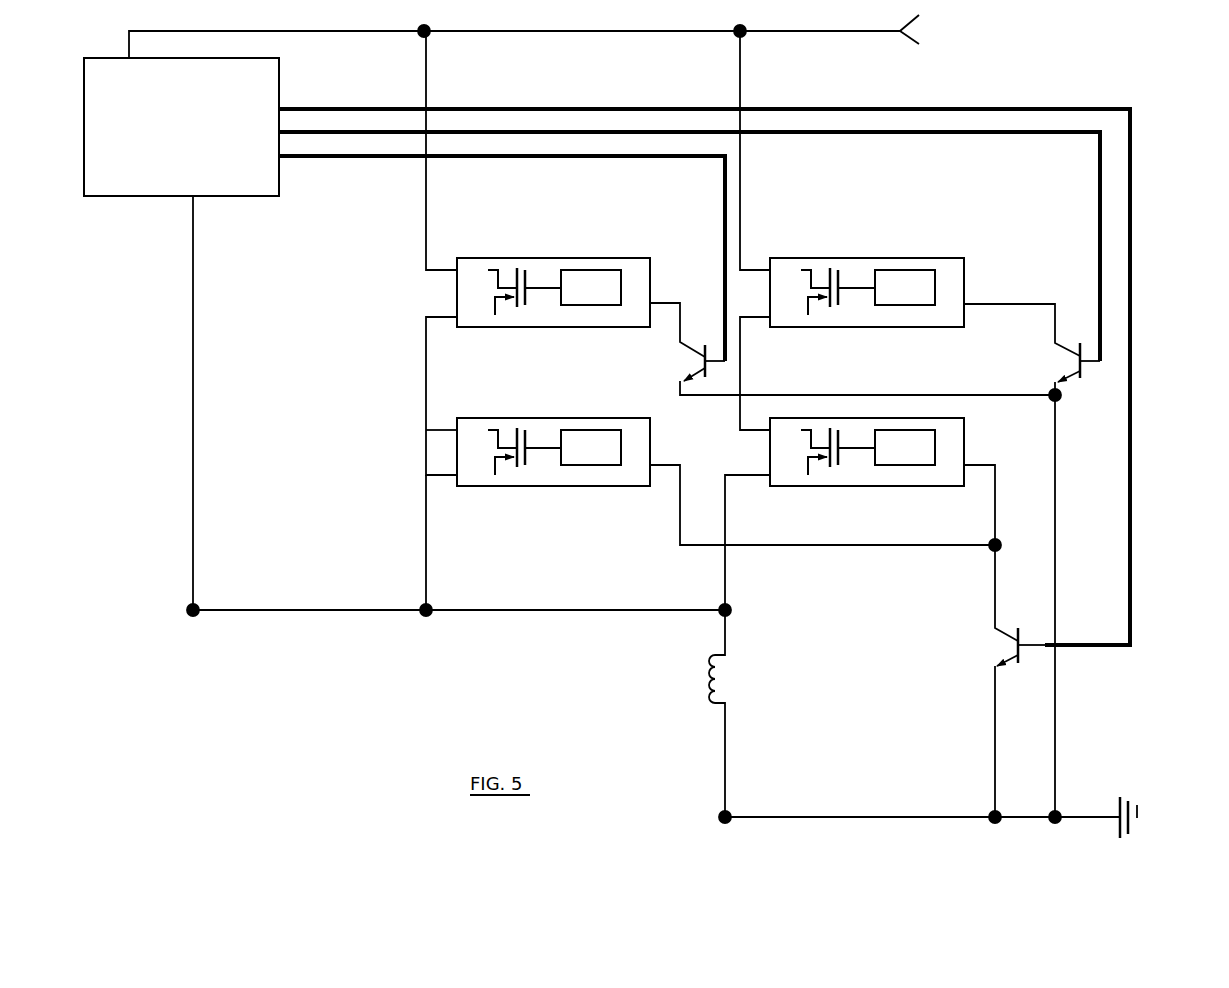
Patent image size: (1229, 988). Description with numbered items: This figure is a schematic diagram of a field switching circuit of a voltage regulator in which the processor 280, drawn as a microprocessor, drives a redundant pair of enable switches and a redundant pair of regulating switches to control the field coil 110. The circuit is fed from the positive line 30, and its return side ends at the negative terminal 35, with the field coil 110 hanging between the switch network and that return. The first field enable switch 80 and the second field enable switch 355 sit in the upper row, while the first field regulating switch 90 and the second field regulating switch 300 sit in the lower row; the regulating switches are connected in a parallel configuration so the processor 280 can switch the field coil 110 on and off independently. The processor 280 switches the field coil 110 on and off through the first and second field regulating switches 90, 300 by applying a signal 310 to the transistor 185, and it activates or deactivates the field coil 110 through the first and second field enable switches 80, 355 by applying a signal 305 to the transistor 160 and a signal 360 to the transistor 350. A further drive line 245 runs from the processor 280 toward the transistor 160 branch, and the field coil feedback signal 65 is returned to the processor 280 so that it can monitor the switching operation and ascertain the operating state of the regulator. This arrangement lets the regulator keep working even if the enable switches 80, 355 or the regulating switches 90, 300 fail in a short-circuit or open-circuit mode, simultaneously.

The positive line 30 is at (915, 37).
The negative terminal 35 is at (1137, 813).
The field coil feedback signal 65 is at (193, 401).
The first field enable switch 80 is at (527, 258).
The first field regulating switch 90 is at (550, 487).
The field coil 110 is at (707, 668).
The transistor 160 is at (682, 344).
The transistor 185 is at (998, 632).
The control line 245 is at (427, 162).
The processor 280 is at (170, 197).
The second field regulating switch 300 is at (930, 487).
The signal 305 is at (725, 187).
The signal 310 is at (1132, 323).
The transistor 350 is at (1063, 379).
The second field enable switch 355 is at (964, 287).
The signal 360 is at (1099, 154).